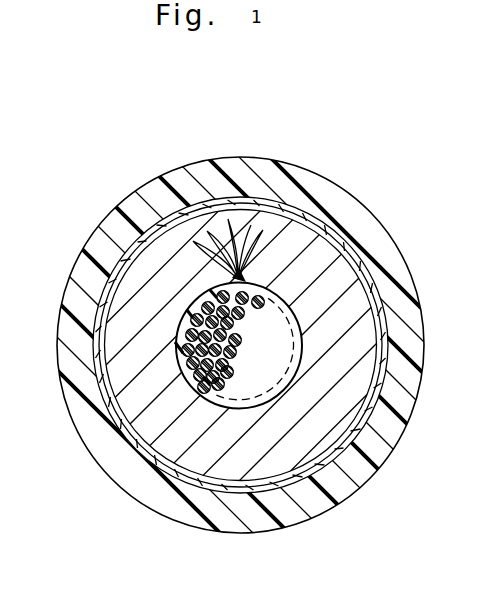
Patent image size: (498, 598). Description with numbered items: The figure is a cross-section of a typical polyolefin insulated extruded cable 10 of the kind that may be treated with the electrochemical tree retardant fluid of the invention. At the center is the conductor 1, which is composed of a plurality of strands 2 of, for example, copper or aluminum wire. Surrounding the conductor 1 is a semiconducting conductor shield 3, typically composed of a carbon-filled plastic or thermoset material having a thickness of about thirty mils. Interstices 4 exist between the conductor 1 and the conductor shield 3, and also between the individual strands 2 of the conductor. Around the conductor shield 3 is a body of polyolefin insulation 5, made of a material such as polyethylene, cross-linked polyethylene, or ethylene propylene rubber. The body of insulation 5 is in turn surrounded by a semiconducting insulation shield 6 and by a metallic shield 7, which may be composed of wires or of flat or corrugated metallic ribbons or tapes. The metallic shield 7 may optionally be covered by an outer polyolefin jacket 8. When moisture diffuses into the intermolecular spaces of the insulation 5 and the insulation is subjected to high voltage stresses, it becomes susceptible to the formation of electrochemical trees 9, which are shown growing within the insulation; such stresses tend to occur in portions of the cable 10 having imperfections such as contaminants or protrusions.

The conductor 1 is at (123, 430).
The strands 2 is at (350, 267).
The semiconducting conductor shield 3 is at (297, 349).
The interstices 4 is at (238, 278).
The polyolefin insulation 5 is at (373, 395).
The semiconducting insulation shield 6 is at (373, 292).
The metallic shield 7 is at (350, 455).
The polyolefin jacket 8 is at (83, 387).
The electrochemical trees 9 is at (252, 236).
The cable 10 is at (233, 271).